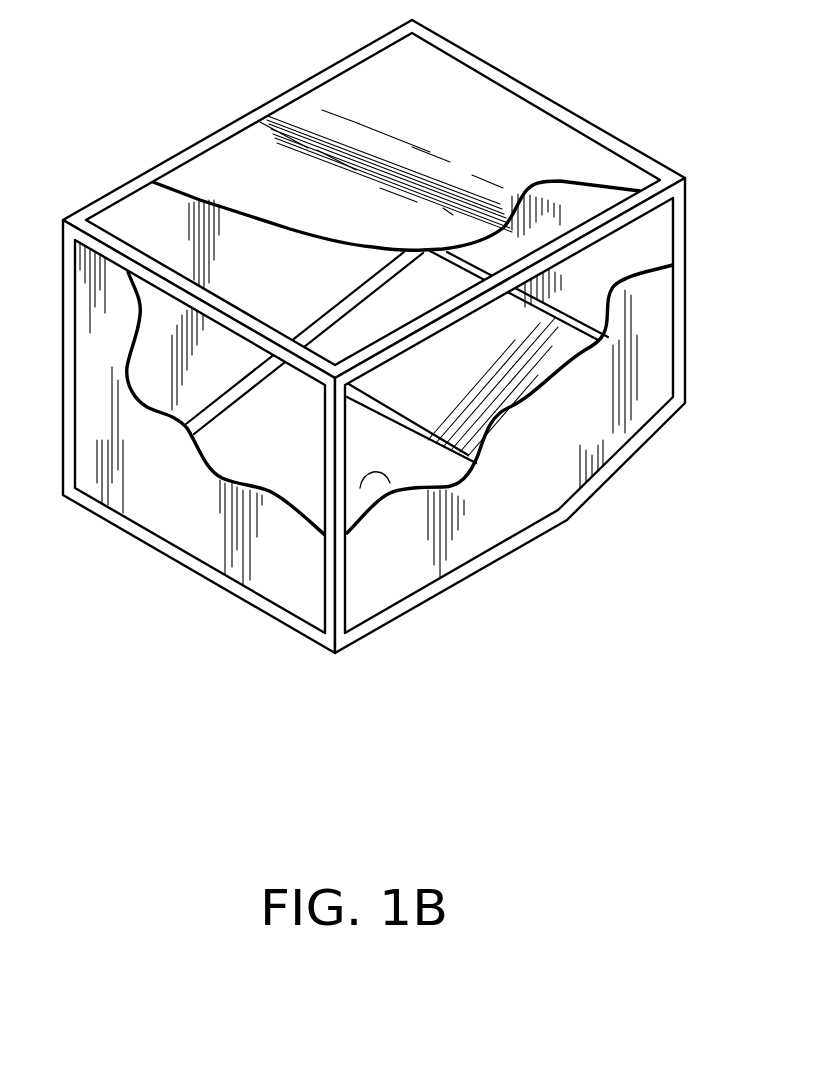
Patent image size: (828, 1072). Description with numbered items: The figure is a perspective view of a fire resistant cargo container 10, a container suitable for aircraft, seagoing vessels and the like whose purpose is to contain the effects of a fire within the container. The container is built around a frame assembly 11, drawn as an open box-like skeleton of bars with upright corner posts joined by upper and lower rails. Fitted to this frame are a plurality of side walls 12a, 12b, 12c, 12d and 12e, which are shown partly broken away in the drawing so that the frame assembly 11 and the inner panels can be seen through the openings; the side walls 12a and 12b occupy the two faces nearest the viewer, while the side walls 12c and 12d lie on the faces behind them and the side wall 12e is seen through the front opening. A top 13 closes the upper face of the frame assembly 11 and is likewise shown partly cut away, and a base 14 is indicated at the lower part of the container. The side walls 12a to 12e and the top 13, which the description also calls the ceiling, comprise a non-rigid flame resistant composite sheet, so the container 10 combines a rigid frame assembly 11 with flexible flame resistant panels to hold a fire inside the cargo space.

The fire resistant cargo container 10 is at (374, 355).
The frame assembly 11 is at (322, 576).
The side wall 12a is at (182, 497).
The side wall 12b is at (537, 484).
The side wall 12c is at (603, 292).
The side wall 12d is at (283, 284).
The side wall 12e is at (437, 391).
The top 13 is at (445, 127).
The base 14 is at (390, 483).